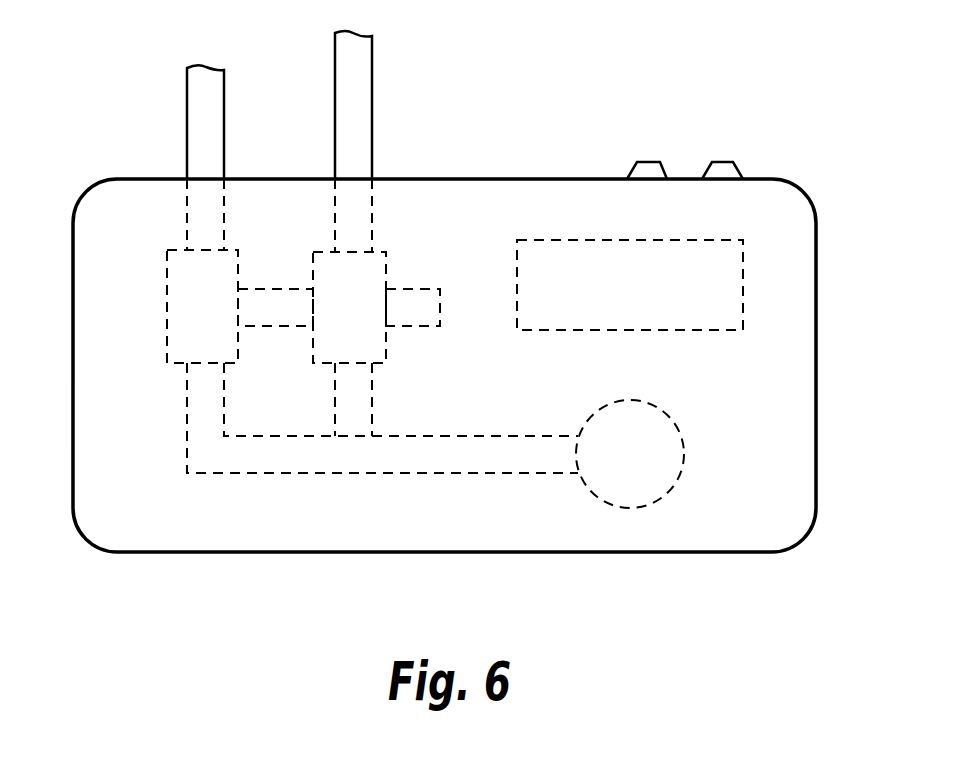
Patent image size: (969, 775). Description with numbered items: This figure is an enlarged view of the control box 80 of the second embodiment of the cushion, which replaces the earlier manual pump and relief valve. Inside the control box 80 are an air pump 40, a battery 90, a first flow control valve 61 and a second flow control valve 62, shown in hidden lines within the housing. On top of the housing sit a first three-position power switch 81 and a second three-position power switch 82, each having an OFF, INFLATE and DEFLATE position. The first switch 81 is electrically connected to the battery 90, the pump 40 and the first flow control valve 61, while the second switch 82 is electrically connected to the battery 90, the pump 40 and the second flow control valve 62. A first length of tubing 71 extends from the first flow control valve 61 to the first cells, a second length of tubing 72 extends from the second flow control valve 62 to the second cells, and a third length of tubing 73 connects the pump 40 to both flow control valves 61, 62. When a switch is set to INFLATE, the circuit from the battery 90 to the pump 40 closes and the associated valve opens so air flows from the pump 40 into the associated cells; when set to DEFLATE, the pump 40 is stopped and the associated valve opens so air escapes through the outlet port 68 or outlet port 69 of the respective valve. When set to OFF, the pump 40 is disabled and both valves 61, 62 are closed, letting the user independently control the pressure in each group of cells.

The control box 80 is at (88, 233).
The first length of tubing 71 is at (191, 115).
The second length of tubing 72 is at (363, 77).
The first three-position power switch 81 is at (630, 172).
The second three-position power switch 82 is at (737, 170).
The first flow control valve 61 is at (198, 304).
The second flow control valve 62 is at (372, 343).
The outlet port 68 is at (285, 300).
The outlet port 69 is at (428, 290).
The battery 90 is at (715, 292).
The third length of tubing 73 is at (467, 458).
The air pump 40 is at (628, 493).